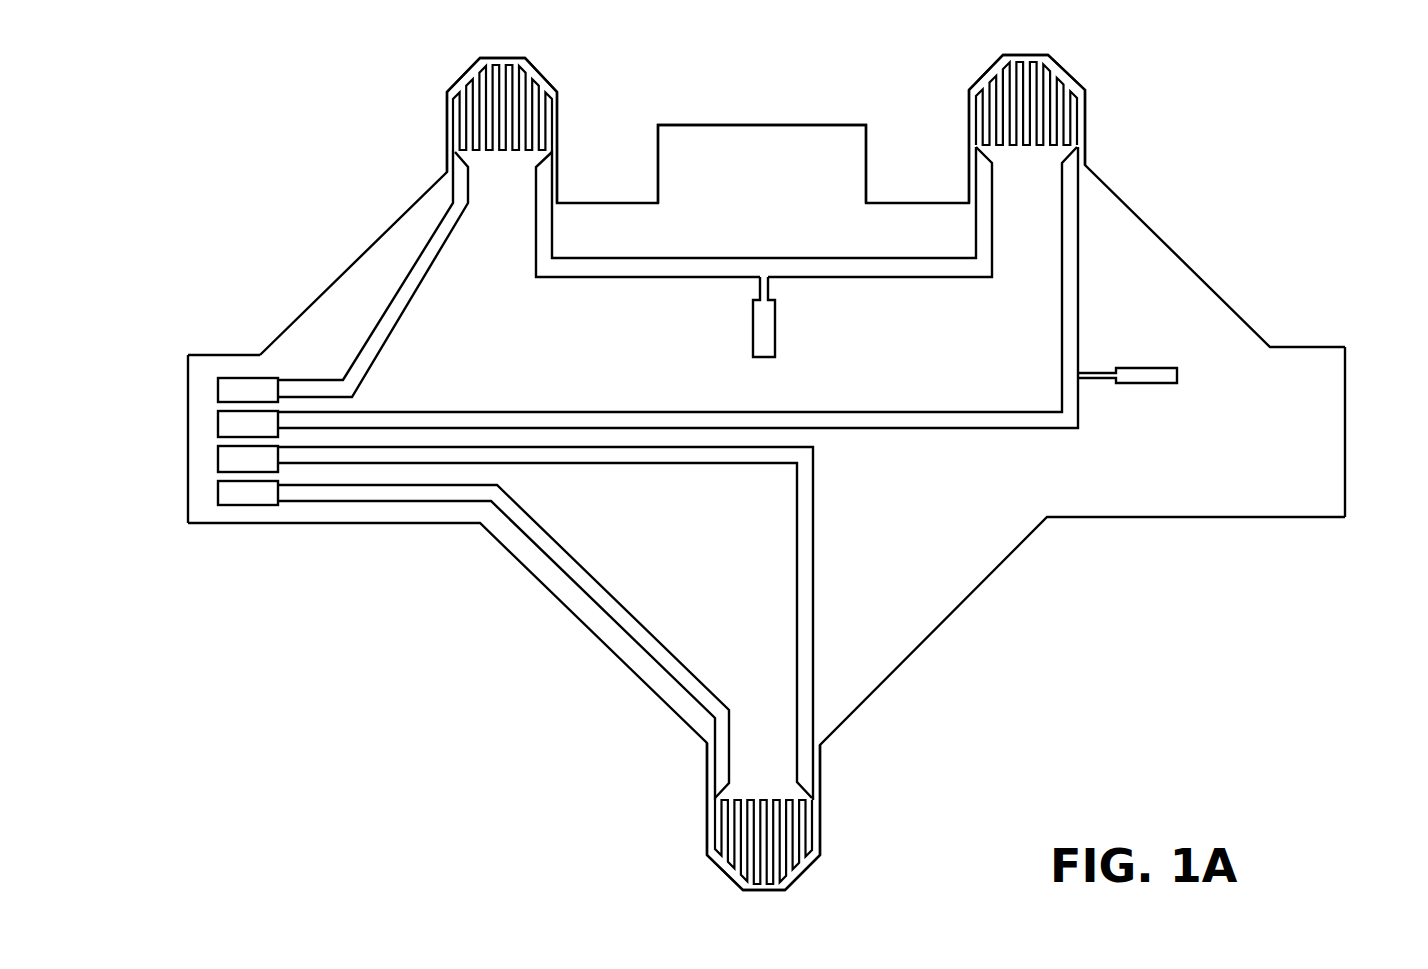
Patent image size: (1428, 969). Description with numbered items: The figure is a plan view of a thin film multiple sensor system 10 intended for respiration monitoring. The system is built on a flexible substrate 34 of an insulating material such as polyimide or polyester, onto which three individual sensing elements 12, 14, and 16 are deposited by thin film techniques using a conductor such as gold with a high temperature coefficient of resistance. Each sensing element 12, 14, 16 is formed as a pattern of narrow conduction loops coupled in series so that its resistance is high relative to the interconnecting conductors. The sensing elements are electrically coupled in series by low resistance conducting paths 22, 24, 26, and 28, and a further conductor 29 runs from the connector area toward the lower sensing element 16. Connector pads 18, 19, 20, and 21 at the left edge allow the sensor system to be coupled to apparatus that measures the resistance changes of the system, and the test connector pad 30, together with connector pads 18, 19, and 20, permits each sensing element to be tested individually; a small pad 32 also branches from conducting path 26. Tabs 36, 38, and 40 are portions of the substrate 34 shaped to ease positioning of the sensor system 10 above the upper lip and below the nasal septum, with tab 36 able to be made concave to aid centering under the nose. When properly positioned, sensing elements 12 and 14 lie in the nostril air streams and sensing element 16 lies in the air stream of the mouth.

The multiple sensor system 10 is at (1285, 127).
The individual sensing element 12 is at (1052, 128).
The individual sensing element 14 is at (477, 130).
The individual sensing element 16 is at (790, 822).
The connector pad 18 is at (224, 361).
The connector pad 19 is at (232, 428).
The connector pad 20 is at (224, 520).
The connector pad 21 is at (232, 458).
The low resistance conducting path 22 is at (412, 277).
The low resistance conducting path 24 is at (764, 212).
The low resistance conducting path 26 is at (760, 287).
The low resistance conducting path 28 is at (672, 668).
The conductive trace 29 is at (545, 623).
The test connector pad 30 is at (795, 317).
The test pad 32 is at (1150, 398).
The flexible substrate 34 is at (735, 554).
The tab 36 is at (799, 133).
The tab 38 is at (197, 440).
The tab 40 is at (1379, 432).